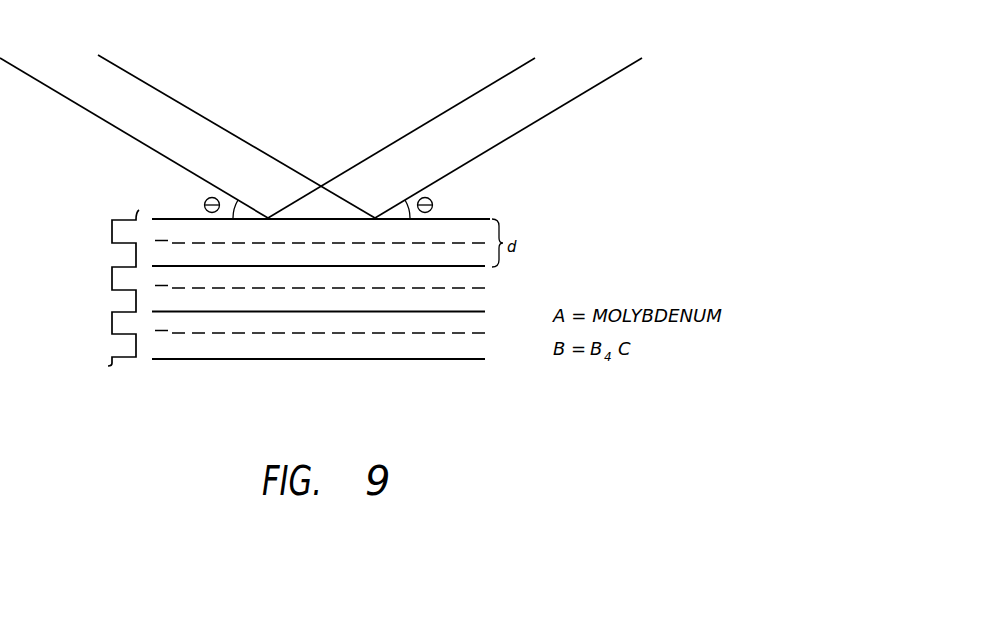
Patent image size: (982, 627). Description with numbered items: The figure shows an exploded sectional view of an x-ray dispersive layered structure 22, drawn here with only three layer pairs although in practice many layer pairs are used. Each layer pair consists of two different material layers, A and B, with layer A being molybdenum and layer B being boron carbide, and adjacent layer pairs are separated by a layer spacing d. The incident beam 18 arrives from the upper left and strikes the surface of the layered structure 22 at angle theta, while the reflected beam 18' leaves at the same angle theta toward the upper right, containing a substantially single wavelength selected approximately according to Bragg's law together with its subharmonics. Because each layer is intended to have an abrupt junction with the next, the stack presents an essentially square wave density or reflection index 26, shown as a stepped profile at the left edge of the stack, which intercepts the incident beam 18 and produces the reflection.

The incident beam 18 is at (187, 129).
The reflected beam 18' is at (455, 129).
The layered structure 22 is at (352, 347).
The square wave density or reflection index 26 is at (112, 279).